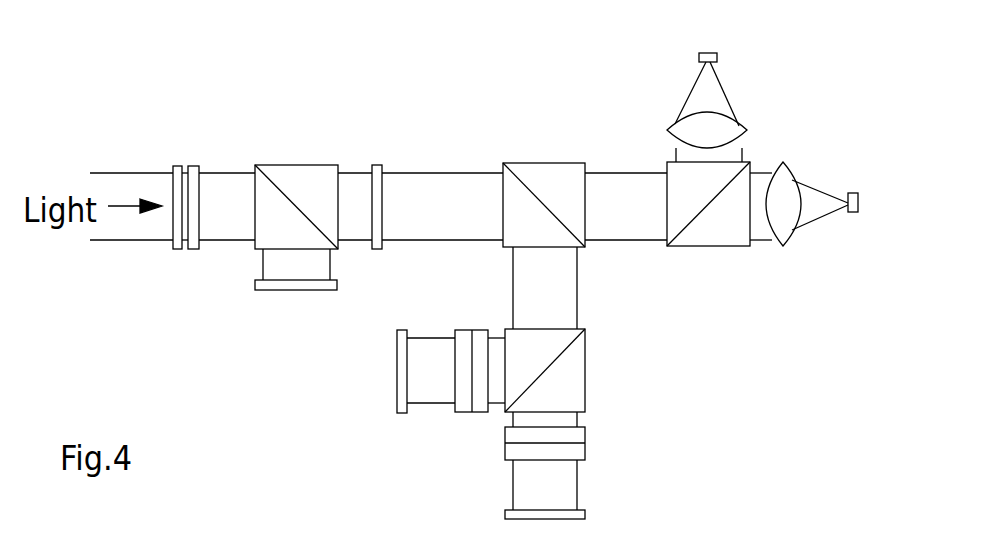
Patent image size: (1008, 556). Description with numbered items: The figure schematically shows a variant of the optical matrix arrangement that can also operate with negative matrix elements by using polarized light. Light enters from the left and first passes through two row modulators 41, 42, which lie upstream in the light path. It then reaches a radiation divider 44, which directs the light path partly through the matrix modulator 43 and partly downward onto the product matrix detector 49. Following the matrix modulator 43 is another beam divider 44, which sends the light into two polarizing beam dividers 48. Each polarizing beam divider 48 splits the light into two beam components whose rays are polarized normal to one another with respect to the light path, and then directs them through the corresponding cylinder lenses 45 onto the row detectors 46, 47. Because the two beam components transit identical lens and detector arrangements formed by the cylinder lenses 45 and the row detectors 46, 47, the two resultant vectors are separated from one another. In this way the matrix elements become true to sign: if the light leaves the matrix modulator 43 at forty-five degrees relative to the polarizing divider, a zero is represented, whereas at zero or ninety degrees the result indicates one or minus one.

The row modulator 41 is at (122, 151).
The row modulator 42 is at (209, 150).
The matrix modulator 43 is at (420, 150).
The radiation divider 44 is at (426, 149).
The cylinder lens 45 is at (788, 183).
The row detector 46 is at (771, 167).
The row detector 47 is at (506, 424).
The polarizing beam divider 48 is at (568, 373).
The product matrix detector 49 is at (263, 324).